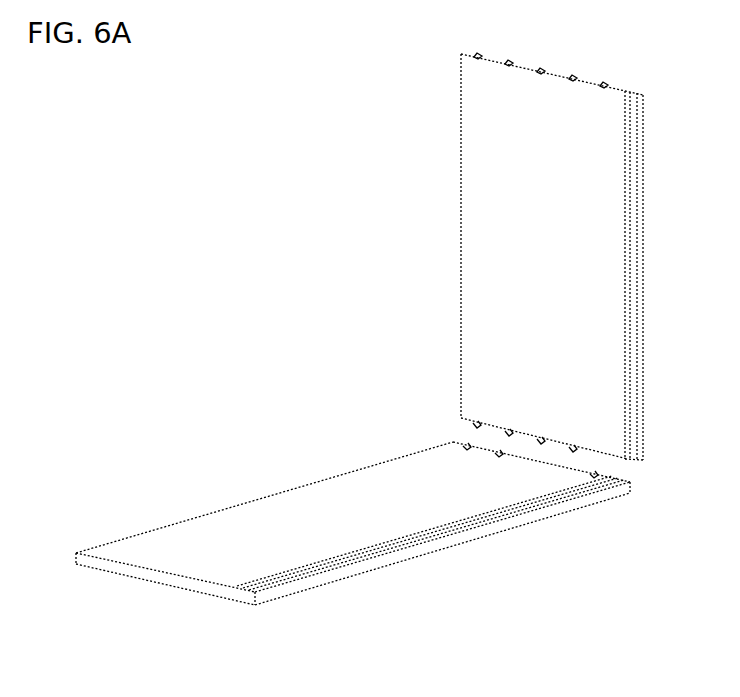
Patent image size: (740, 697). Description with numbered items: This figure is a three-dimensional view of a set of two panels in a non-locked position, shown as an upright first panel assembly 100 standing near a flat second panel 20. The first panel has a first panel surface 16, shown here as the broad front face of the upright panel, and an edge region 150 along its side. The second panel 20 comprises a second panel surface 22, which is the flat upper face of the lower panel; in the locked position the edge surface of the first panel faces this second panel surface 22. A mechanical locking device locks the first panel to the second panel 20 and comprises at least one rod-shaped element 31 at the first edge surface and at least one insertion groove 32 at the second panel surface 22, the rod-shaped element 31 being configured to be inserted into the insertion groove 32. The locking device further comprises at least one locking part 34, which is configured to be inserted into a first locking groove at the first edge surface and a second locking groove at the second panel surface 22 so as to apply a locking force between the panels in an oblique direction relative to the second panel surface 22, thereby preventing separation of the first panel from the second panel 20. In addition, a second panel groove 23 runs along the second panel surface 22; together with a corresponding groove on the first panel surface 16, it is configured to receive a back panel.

The display apparatus 100 is at (431, 180).
The first panel surface 16 is at (497, 316).
The panel side edge portion 150 is at (627, 253).
The second panel 20 is at (210, 482).
The second panel surface 22 is at (343, 490).
The second panel groove 23 is at (365, 556).
The rod-shaped element 31 is at (533, 442).
The insertion groove 32 is at (559, 470).
The locking part 34 is at (602, 458).